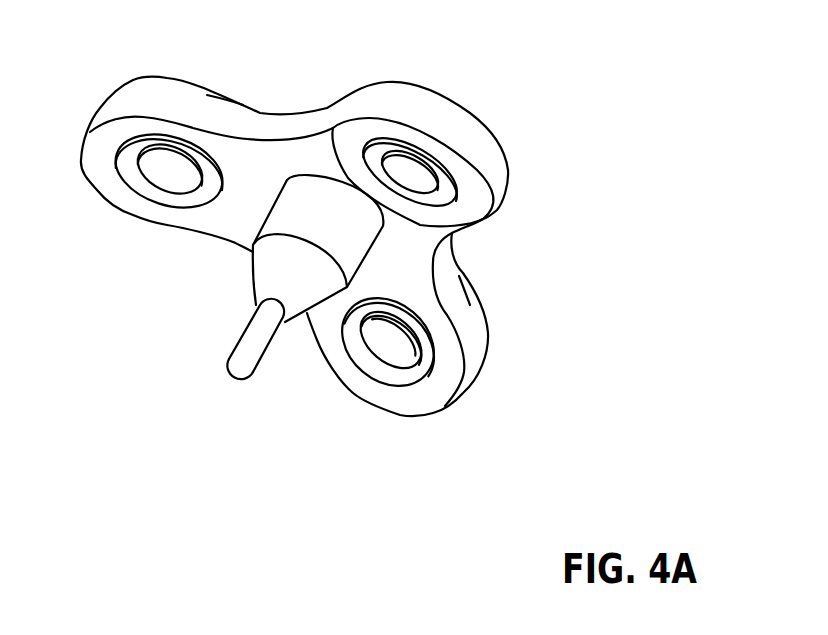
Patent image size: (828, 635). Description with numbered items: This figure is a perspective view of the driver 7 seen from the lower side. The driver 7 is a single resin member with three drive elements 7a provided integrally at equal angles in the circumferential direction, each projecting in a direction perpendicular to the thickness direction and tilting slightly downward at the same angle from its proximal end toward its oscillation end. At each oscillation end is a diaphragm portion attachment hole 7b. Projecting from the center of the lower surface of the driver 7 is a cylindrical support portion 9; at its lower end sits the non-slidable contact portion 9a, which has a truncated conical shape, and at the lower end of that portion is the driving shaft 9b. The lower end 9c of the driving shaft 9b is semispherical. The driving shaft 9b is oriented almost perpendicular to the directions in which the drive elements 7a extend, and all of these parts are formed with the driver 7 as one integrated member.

The driver 7 is at (293, 100).
The drive element 7a is at (110, 183).
The diaphragm portion attachment hole 7b is at (166, 163).
The support portion 9 is at (268, 204).
The non-slidable contact portion 9a is at (263, 268).
The driving shaft 9b is at (233, 330).
The lower end 9c is at (243, 360).